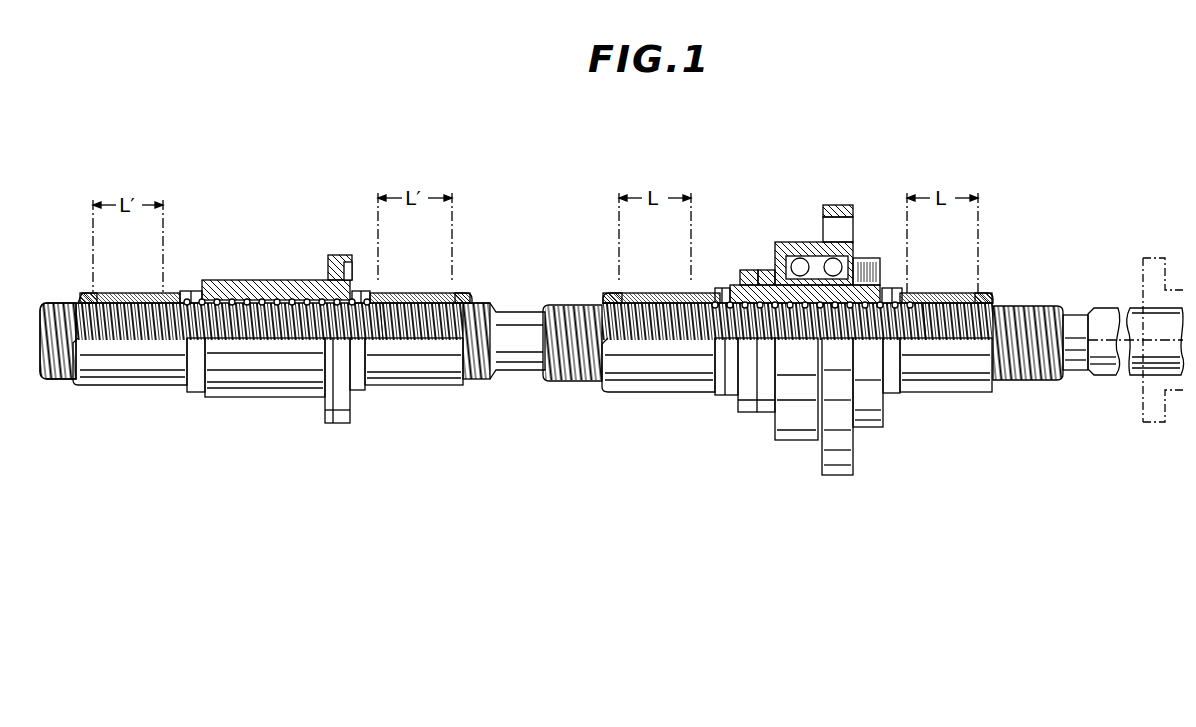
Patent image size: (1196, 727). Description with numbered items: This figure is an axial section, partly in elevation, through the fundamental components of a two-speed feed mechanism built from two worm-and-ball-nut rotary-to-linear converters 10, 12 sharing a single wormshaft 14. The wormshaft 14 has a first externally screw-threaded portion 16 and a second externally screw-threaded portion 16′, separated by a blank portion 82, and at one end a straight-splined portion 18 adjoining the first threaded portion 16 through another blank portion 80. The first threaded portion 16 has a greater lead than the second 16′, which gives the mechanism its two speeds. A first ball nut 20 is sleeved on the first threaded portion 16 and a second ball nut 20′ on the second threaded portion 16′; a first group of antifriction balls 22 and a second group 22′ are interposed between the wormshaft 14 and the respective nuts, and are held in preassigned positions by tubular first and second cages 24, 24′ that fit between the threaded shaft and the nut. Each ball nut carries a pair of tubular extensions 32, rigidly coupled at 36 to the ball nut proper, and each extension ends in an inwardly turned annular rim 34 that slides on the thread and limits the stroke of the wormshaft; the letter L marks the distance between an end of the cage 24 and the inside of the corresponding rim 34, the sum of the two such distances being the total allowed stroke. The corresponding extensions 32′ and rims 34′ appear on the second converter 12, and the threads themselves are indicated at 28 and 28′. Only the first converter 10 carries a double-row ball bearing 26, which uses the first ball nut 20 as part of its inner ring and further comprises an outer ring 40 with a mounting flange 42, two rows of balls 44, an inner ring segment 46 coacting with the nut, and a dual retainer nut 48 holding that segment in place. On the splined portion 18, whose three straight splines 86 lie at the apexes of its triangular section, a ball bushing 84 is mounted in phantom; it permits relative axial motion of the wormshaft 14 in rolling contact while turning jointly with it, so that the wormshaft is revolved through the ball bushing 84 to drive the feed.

The first rotary-to-linear converter 10 is at (748, 426).
The second rotary-to-linear converter 12 is at (259, 404).
The wormshaft 14 is at (557, 298).
The first externally screw-threaded portion 16 is at (571, 386).
The second externally screw-threaded portion 16′ is at (57, 374).
The straight-splined portion 18 is at (1090, 384).
The first ball nut 20 is at (868, 292).
The second ball nut 20′ is at (256, 282).
The first group of antifriction balls 22 is at (806, 308).
The second group of antifriction balls 22′ is at (300, 300).
The first cage 24 is at (925, 308).
The second cage 24′ is at (383, 305).
The double-row ball bearing 26 is at (840, 198).
The thread 28 is at (600, 312).
The thread 28′ is at (55, 310).
The tubular extensions 32 is at (665, 293).
The sleeve 32′ is at (146, 293).
The annular rim 34 is at (614, 298).
The end cap 34′ is at (90, 297).
The coupling 36 is at (722, 291).
The outer ring 40 is at (797, 244).
The mounting flange 42 is at (830, 207).
The balls 44 is at (843, 262).
The inner ring segment 46 is at (766, 272).
The dual retainer nut 48 is at (748, 272).
The blank portion 80 is at (1075, 316).
The blank portion 82 is at (522, 372).
The ball bushing 84 is at (1149, 256).
The straight splines 86 is at (1110, 308).